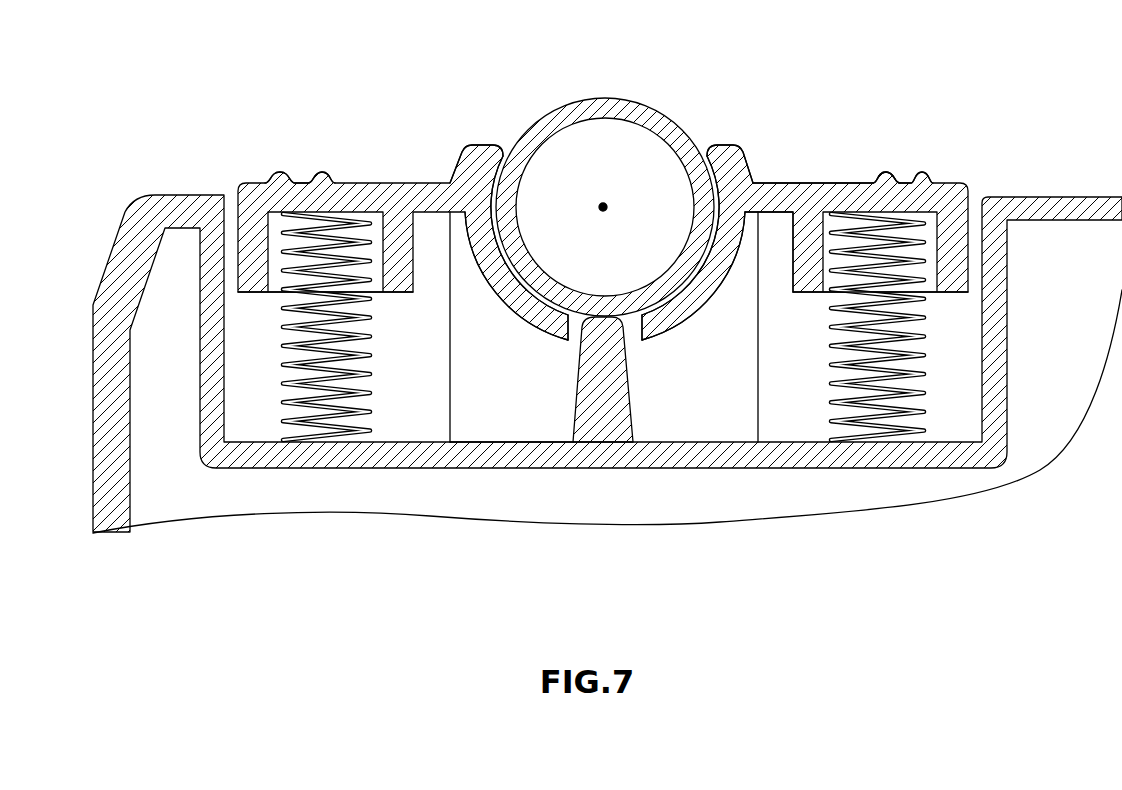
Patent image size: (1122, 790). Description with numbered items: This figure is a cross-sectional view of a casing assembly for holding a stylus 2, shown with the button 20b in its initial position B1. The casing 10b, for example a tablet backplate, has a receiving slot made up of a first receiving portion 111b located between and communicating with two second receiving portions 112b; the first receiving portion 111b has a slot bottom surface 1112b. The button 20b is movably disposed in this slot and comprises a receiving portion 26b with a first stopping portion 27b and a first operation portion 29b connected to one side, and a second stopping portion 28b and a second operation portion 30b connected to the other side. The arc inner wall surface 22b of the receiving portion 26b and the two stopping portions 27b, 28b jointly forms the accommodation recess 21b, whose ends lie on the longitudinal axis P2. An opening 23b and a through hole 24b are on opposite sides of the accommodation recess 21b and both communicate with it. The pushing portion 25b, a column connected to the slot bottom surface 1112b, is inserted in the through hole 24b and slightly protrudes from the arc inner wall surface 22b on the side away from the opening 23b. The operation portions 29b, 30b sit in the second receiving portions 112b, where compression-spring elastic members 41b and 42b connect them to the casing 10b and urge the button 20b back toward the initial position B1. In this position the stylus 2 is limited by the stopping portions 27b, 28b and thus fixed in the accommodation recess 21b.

The casing 10b is at (1067, 201).
The stylus 2 is at (598, 105).
The longitudinal axis P2 is at (604, 204).
The pushing portion 25b is at (602, 372).
The elastic member 42b is at (327, 403).
The elastic member 41b is at (888, 410).
The second operation portion 30b is at (319, 176).
The button 20b is at (946, 170).
The initial position B1 is at (892, 160).
The first operation portion 29b is at (849, 194).
The second stopping portion 28b is at (478, 150).
The first stopping portion 27b is at (729, 160).
The accommodation recess 21b is at (494, 246).
The arc inner wall surface 22b is at (500, 206).
The opening 23b is at (702, 142).
The receiving portion 26b is at (678, 325).
The through hole 24b is at (636, 343).
The first receiving portion 111b is at (527, 403).
The slot bottom surface 1112b is at (483, 434).
The second receiving portions 112b is at (254, 404).